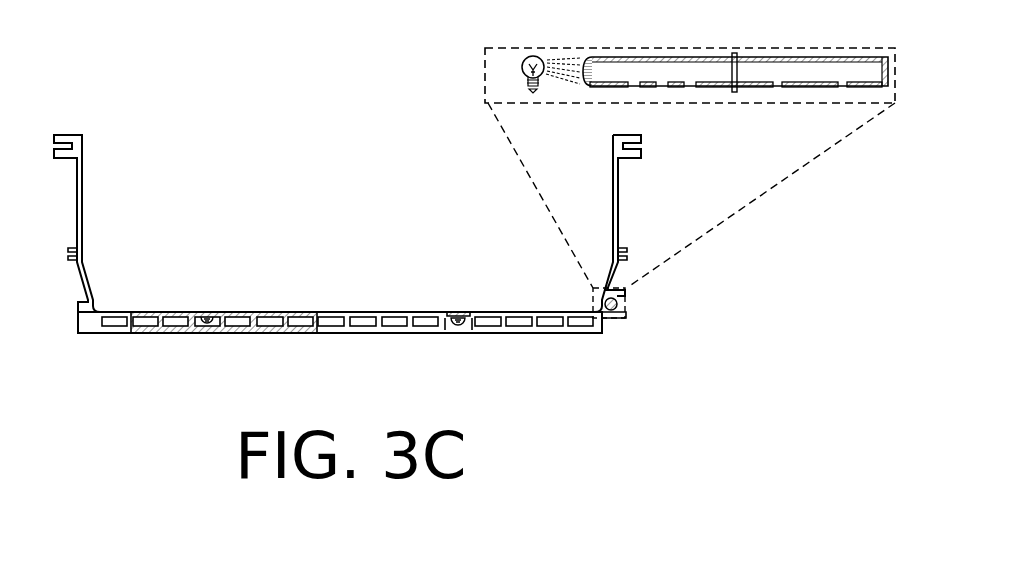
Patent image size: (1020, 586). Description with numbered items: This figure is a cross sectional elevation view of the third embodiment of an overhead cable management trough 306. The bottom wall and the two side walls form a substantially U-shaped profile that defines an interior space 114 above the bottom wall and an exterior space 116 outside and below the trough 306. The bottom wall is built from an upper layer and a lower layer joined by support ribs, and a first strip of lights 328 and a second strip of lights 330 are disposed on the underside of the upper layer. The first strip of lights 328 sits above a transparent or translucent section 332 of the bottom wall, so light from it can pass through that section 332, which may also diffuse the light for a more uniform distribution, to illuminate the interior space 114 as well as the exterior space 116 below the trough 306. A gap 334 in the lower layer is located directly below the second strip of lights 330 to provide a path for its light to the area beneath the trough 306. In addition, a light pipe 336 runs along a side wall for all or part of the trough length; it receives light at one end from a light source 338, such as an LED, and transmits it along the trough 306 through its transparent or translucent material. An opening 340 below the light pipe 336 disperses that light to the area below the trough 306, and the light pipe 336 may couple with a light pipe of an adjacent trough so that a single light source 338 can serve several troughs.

The interior space 114 is at (374, 210).
The exterior space 116 is at (374, 400).
The trough 306 is at (678, 296).
The first strip of lights 328 is at (207, 325).
The second strip of lights 330 is at (461, 330).
The transparent or translucent section 332 is at (256, 312).
The gap 334 is at (453, 332).
The light pipe 336 is at (624, 70).
The light source 338 is at (537, 62).
The opening 340 is at (637, 88).